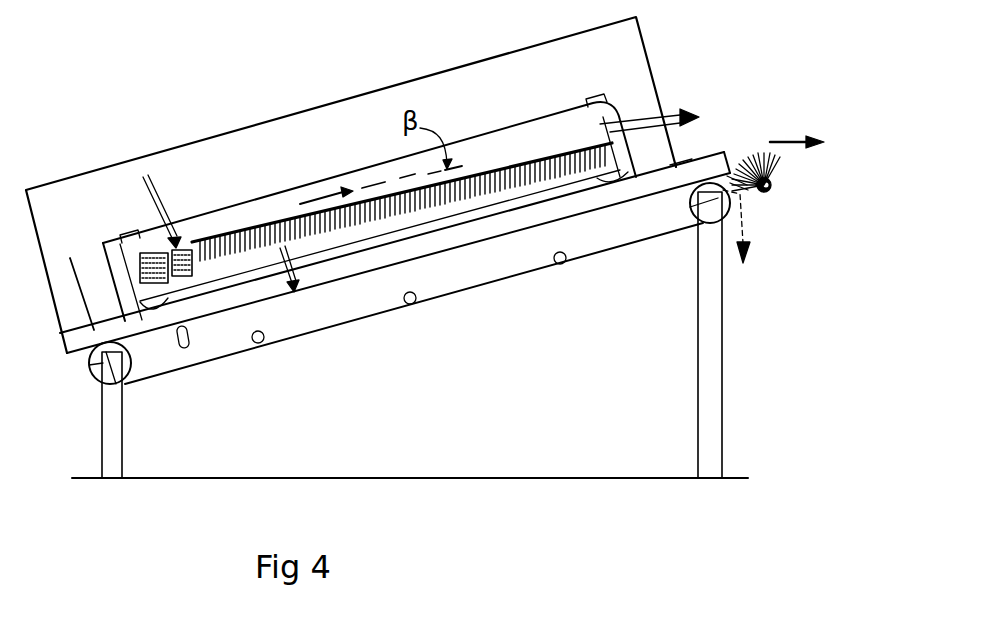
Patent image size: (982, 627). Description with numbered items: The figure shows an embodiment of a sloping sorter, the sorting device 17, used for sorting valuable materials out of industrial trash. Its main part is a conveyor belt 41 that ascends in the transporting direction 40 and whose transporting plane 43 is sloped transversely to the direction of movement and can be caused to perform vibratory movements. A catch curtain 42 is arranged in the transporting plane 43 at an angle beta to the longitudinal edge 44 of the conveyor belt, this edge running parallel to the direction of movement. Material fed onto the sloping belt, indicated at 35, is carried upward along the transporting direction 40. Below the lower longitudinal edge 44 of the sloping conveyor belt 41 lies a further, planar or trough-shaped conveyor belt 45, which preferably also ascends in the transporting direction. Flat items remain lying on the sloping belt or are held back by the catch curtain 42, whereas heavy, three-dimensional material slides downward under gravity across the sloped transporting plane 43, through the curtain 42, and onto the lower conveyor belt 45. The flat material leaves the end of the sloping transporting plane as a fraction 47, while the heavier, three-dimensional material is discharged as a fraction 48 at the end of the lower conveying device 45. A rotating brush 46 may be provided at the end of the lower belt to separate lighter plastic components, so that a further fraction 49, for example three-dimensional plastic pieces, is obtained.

The sorting device 17 is at (182, 73).
The stack of articles being fed 35 is at (156, 178).
The transporting direction 40 is at (325, 187).
The conveyor belt 41 is at (458, 124).
The catch curtain 42 is at (503, 167).
The transporting plane 43 is at (452, 189).
The longitudinal edge 44 is at (246, 198).
The further conveyor belt 45 is at (467, 262).
The rotating brush 46 is at (789, 160).
The fraction 47 is at (659, 105).
The fraction 48 is at (756, 228).
The further fraction 49 is at (790, 133).